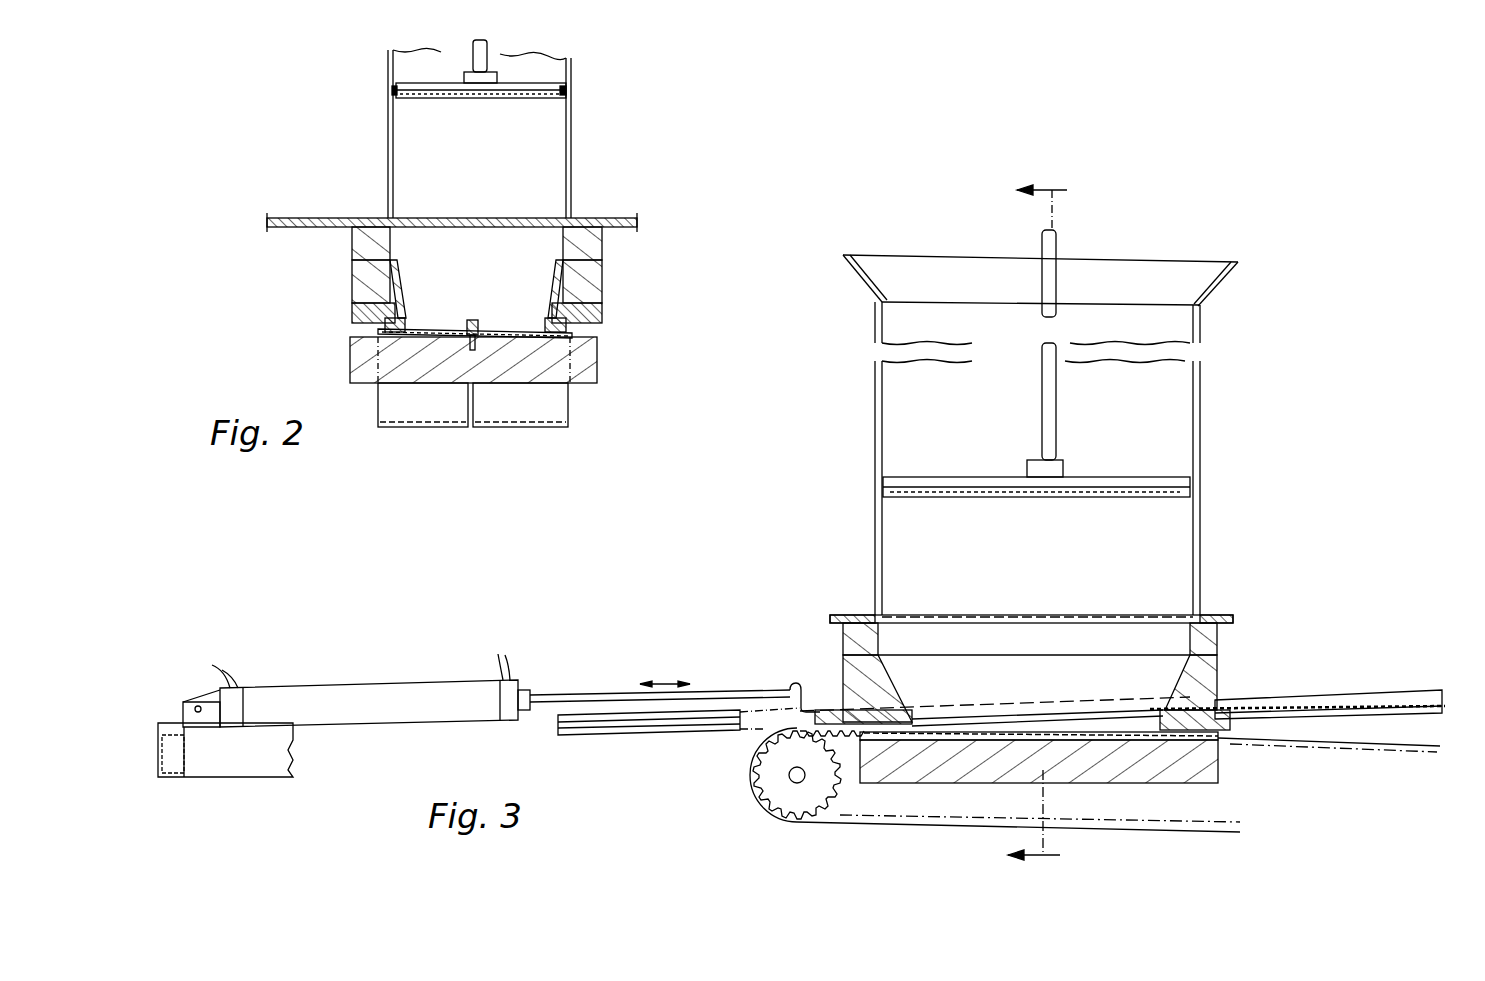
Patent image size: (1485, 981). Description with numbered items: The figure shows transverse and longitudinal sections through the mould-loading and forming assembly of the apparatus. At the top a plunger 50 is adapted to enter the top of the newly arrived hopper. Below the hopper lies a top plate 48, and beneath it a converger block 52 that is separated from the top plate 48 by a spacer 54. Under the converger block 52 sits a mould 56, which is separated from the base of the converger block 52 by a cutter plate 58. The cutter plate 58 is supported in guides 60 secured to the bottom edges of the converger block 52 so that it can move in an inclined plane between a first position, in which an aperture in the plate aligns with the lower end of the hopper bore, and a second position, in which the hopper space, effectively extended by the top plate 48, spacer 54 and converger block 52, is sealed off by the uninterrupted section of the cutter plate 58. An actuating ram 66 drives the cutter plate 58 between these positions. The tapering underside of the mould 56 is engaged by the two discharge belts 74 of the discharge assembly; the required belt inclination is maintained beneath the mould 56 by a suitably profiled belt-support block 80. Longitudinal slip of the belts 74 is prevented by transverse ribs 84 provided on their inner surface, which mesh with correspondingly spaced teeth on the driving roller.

In FIG. 2, the top plate 48 is at (310, 218).
In FIG. 3, the top plate 48 is at (1218, 614).
In FIG. 2, the plunger 50 is at (400, 86).
In FIG. 3, the plunger 50 is at (1140, 483).
In FIG. 2, the converger block 52 is at (354, 290).
In FIG. 3, the converger block 52 is at (1215, 682).
In FIG. 2, the spacer 54 is at (598, 247).
In FIG. 3, the spacer 54 is at (845, 648).
In FIG. 2, the mould 56 is at (537, 323).
In FIG. 3, the mould 56 is at (995, 704).
In FIG. 2, the cutter plate 58 is at (400, 325).
In FIG. 3, the cutter plate 58 is at (1300, 707).
In FIG. 2, the guides 60 is at (353, 316).
In FIG. 3, the guides 60 is at (673, 728).
In FIG. 3, the actuating ram 66 is at (370, 692).
In FIG. 2, the discharge belts 74 is at (504, 320).
In FIG. 2, the belt-support block 80 is at (596, 363).
In FIG. 3, the belt-support block 80 is at (1196, 778).
In FIG. 2, the transverse ribs 84 is at (528, 418).
In FIG. 3, the transverse ribs 84 is at (848, 815).